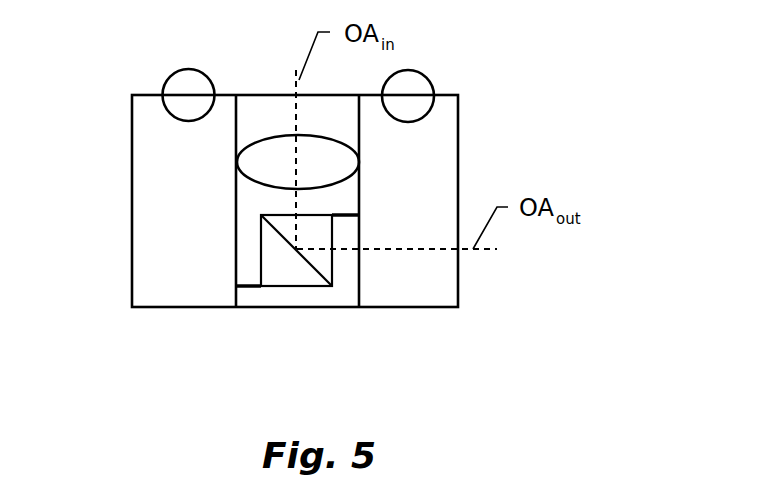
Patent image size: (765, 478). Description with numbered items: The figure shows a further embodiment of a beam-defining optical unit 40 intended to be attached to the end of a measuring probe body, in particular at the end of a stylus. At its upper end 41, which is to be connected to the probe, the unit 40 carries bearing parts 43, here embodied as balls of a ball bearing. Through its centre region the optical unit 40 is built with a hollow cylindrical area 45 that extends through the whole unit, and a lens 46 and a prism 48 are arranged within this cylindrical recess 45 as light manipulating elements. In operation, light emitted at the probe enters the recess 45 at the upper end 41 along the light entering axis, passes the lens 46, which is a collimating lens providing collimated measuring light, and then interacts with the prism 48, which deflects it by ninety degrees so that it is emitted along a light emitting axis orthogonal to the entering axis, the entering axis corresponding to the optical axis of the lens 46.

The beam-defining optical unit 40 is at (242, 163).
The upper end 41 is at (256, 140).
The bearing parts 43 is at (455, 82).
The hollow cylindrical area 45 is at (275, 290).
The lens 46 is at (210, 157).
The prism 48 is at (197, 250).